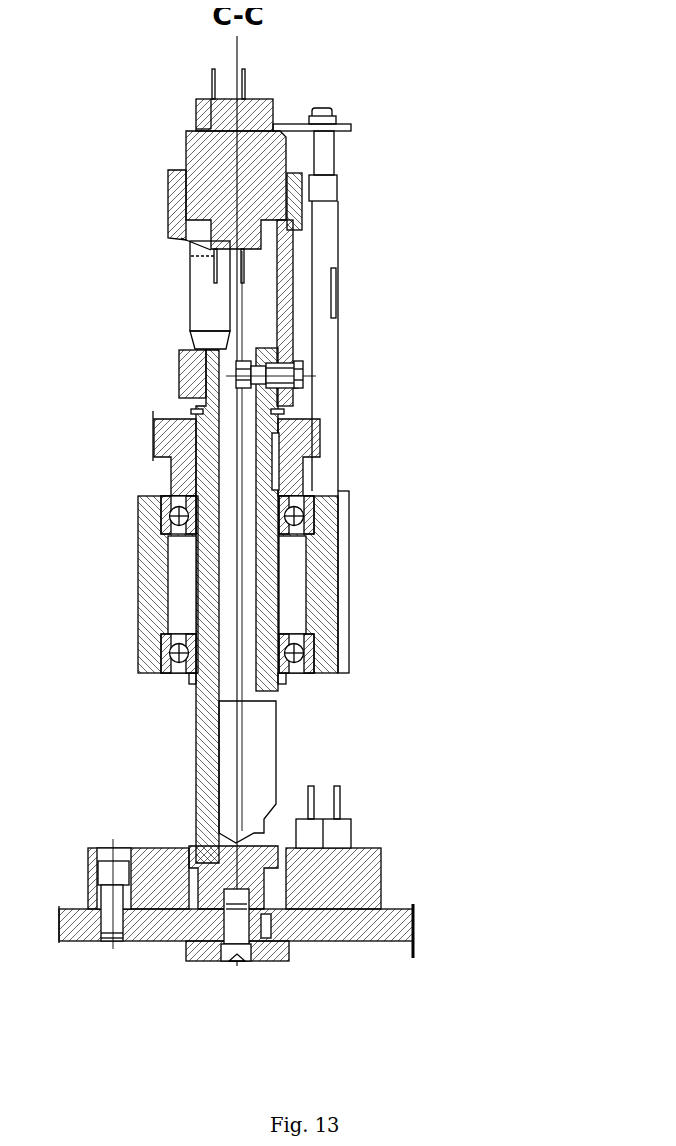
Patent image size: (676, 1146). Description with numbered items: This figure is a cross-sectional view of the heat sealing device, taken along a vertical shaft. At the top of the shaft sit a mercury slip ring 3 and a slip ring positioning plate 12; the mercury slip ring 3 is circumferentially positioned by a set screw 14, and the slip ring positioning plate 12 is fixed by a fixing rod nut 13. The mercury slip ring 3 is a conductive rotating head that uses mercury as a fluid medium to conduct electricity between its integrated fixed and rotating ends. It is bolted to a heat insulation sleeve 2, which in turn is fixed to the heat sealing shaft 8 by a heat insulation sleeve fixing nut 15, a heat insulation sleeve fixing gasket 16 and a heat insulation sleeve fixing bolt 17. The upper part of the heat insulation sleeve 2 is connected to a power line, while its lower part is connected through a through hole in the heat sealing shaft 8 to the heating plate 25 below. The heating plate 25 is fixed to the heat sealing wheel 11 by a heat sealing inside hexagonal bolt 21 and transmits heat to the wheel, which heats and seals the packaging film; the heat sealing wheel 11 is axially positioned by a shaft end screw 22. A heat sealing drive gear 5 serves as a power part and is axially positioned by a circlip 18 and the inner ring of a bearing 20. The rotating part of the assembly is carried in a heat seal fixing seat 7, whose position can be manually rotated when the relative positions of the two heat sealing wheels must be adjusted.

The slip ring positioning plate 12 is at (270, 108).
The fixing rod nut 13 is at (320, 118).
The mercury slip ring 3 is at (262, 158).
The set screw 14 is at (282, 200).
The heat insulation sleeve 2 is at (283, 293).
The heat insulation sleeve fixing nut 15 is at (247, 363).
The heat insulation sleeve fixing gasket 16 is at (260, 375).
The heat insulation sleeve fixing bolt 17 is at (297, 385).
The circlip 18 is at (280, 410).
The heat sealing drive gear 5 is at (293, 463).
The bearing 20 is at (300, 515).
The heat seal fixing seat 7 is at (330, 640).
The heat sealing inside hexagonal bolt 21 is at (97, 862).
The heat sealing shaft 8 is at (237, 840).
The shaft end screw 22 is at (235, 893).
The heating plate 25 is at (352, 902).
The heat sealing wheel 11 is at (390, 928).